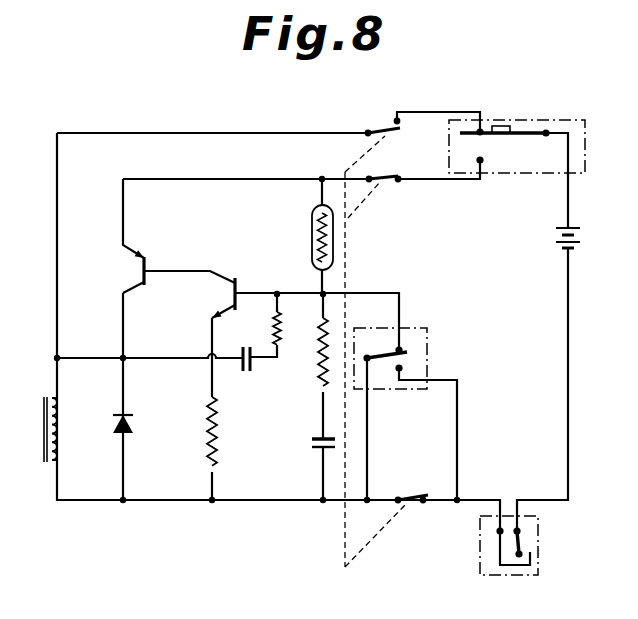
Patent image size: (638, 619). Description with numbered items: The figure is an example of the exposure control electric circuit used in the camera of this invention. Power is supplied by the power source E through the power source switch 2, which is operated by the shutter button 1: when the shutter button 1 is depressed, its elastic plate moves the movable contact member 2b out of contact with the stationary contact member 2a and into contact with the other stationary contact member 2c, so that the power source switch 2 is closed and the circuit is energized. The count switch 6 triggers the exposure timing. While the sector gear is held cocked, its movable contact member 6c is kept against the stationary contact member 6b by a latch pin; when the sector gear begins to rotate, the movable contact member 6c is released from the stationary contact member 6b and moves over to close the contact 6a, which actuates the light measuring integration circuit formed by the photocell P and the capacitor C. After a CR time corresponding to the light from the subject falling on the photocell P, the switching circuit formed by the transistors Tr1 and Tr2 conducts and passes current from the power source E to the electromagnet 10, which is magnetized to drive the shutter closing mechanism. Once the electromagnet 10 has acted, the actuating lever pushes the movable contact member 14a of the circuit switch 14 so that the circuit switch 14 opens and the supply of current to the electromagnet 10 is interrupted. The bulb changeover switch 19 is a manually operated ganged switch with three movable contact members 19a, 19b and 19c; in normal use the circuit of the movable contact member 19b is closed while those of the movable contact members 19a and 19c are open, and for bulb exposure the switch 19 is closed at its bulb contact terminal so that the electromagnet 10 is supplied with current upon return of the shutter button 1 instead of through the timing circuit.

The electromagnet 10 is at (44, 429).
The transistor Tr2 is at (147, 262).
The transistor Tr1 is at (238, 291).
The photocell P is at (312, 236).
The capacitor C is at (319, 450).
The movable contact member 19b is at (388, 126).
The movable contact member 19a is at (396, 172).
The movable contact member 19c is at (415, 496).
The bulb changeover switch 19 is at (393, 520).
The power source switch 2 is at (585, 148).
The stationary contact member 2a is at (481, 128).
The shutter button 1 is at (499, 126).
The movable contact member 2b is at (518, 136).
The stationary contact member 2c is at (483, 164).
The power source E is at (575, 238).
The count switch 6 is at (378, 391).
The stationary contact member 6b is at (396, 346).
The movable contact member 6c is at (404, 357).
The contact 6a is at (407, 382).
The circuit switch 14 is at (480, 560).
The movable contact member 14a is at (521, 548).